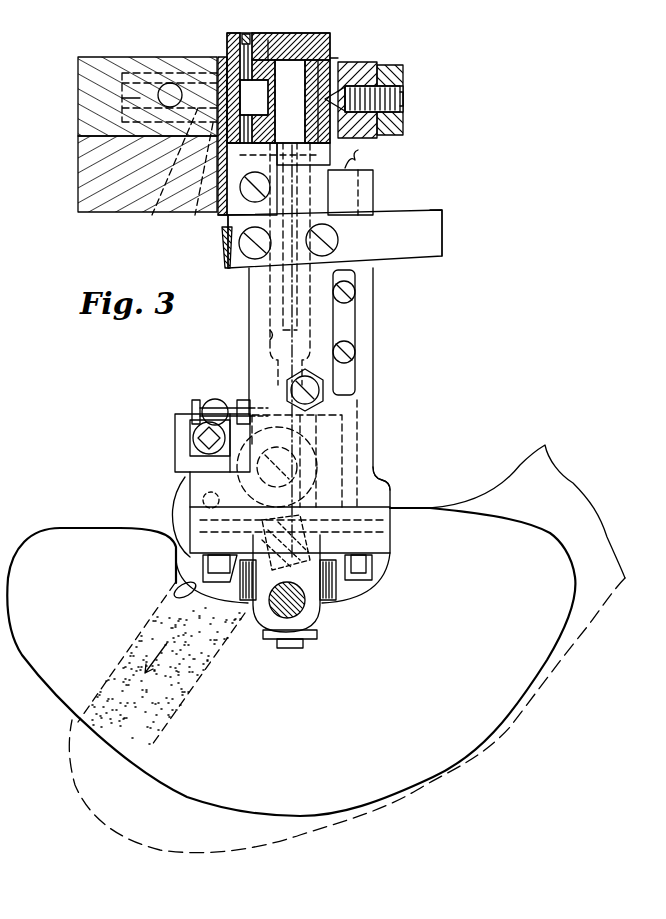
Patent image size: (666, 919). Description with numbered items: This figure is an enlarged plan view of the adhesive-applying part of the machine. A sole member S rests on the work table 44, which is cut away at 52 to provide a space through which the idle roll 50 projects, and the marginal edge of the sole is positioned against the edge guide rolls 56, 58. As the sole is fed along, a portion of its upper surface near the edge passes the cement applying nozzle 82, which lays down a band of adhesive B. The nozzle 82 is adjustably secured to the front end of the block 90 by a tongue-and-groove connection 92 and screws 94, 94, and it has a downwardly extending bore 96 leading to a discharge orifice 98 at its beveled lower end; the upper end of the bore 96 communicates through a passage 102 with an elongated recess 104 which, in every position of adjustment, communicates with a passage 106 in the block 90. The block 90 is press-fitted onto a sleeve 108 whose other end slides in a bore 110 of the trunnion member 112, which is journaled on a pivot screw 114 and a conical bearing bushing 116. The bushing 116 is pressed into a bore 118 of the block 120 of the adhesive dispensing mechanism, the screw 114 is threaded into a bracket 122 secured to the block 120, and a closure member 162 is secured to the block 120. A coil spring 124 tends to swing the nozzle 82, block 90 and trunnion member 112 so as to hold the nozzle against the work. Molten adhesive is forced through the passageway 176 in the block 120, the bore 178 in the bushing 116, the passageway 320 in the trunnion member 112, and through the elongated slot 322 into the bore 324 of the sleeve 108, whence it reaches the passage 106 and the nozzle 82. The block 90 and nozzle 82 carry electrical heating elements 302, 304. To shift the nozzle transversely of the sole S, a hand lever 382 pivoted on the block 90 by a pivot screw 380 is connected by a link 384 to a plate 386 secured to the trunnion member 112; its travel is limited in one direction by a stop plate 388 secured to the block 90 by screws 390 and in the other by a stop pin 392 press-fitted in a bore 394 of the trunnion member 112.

The block 120 is at (118, 57).
The closure member 162 is at (95, 212).
The bore 118 is at (150, 73).
The passageway 176 is at (122, 98).
The bore 178 is at (158, 212).
The conical bearing bushing 116 is at (222, 70).
The stop pin 392 is at (215, 213).
The bore 110 is at (318, 45).
The bore 394 is at (247, 40).
The passageway 320 is at (255, 97).
The elongated slot 322 is at (292, 68).
The trunnion member 112 is at (268, 42).
The sleeve 108 is at (332, 58).
The bore 324 is at (270, 340).
The bracket 122 is at (404, 64).
The pivot screw 114 is at (404, 98).
The electrical heating element 302 is at (375, 190).
The link 384 is at (224, 263).
The plate 386 is at (227, 228).
The pivot screw 380 is at (340, 240).
The hand lever 382 is at (428, 211).
The block 90 is at (375, 372).
The stop plate 388 is at (357, 280).
The screws 390 is at (350, 352).
The passage 106 is at (335, 470).
The edge guide roll 56 is at (305, 455).
The tongue-and-groove connection 92 is at (386, 490).
The coil spring 124 is at (213, 400).
The edge guide roll 58 is at (180, 512).
The elongated recess 104 is at (335, 525).
The passage 102 is at (335, 538).
The screws 94 is at (200, 566).
The bore 96 is at (250, 595).
The cement applying nozzle 82 is at (333, 588).
The discharge orifice 98 is at (255, 622).
The electrical heating element 304 is at (290, 620).
The cut-away 52 is at (190, 592).
The idle roll 50 is at (375, 607).
The sole member S is at (587, 623).
The work table 44 is at (372, 722).
The band of adhesive B is at (178, 714).